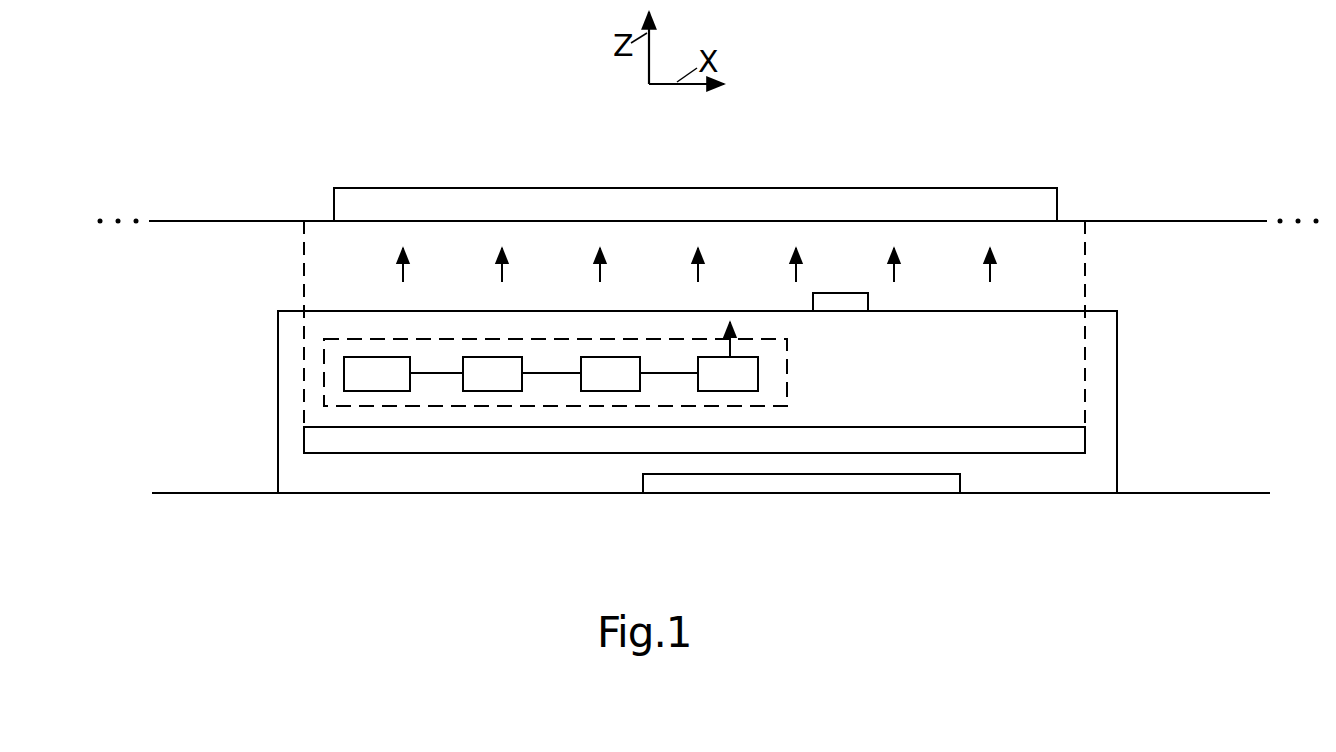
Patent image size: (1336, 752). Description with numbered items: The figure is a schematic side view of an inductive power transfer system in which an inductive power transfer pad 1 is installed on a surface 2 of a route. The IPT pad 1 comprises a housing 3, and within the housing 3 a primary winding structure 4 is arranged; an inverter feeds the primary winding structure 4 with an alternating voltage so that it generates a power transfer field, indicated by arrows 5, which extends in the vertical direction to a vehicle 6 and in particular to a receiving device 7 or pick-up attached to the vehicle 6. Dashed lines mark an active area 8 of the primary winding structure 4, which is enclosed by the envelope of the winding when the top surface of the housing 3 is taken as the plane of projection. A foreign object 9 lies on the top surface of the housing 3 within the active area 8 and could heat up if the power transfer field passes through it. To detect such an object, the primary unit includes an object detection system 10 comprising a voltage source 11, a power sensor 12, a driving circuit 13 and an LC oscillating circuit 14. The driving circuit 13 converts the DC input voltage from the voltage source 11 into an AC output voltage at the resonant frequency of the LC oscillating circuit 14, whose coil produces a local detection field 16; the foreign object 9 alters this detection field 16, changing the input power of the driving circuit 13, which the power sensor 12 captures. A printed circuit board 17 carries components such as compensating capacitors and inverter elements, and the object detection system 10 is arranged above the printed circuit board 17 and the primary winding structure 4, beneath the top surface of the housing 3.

The inductive power transfer pad 1 is at (691, 344).
The surface of a route 2 is at (1193, 491).
The housing 3 is at (1117, 348).
The primary winding structure 4 is at (304, 443).
The arrows 5 is at (405, 270).
The vehicle 6 is at (1152, 219).
The receiving device 7 is at (970, 188).
The active area 8 is at (1087, 281).
The foreign object 9 is at (846, 293).
The object detection system 10 is at (369, 407).
The voltage source 11 is at (344, 376).
The power sensor 12 is at (482, 391).
The driving circuit 13 is at (597, 391).
The LC oscillating circuit 14 is at (758, 373).
The local detection field 16 is at (735, 327).
The printed circuit board 17 is at (853, 485).